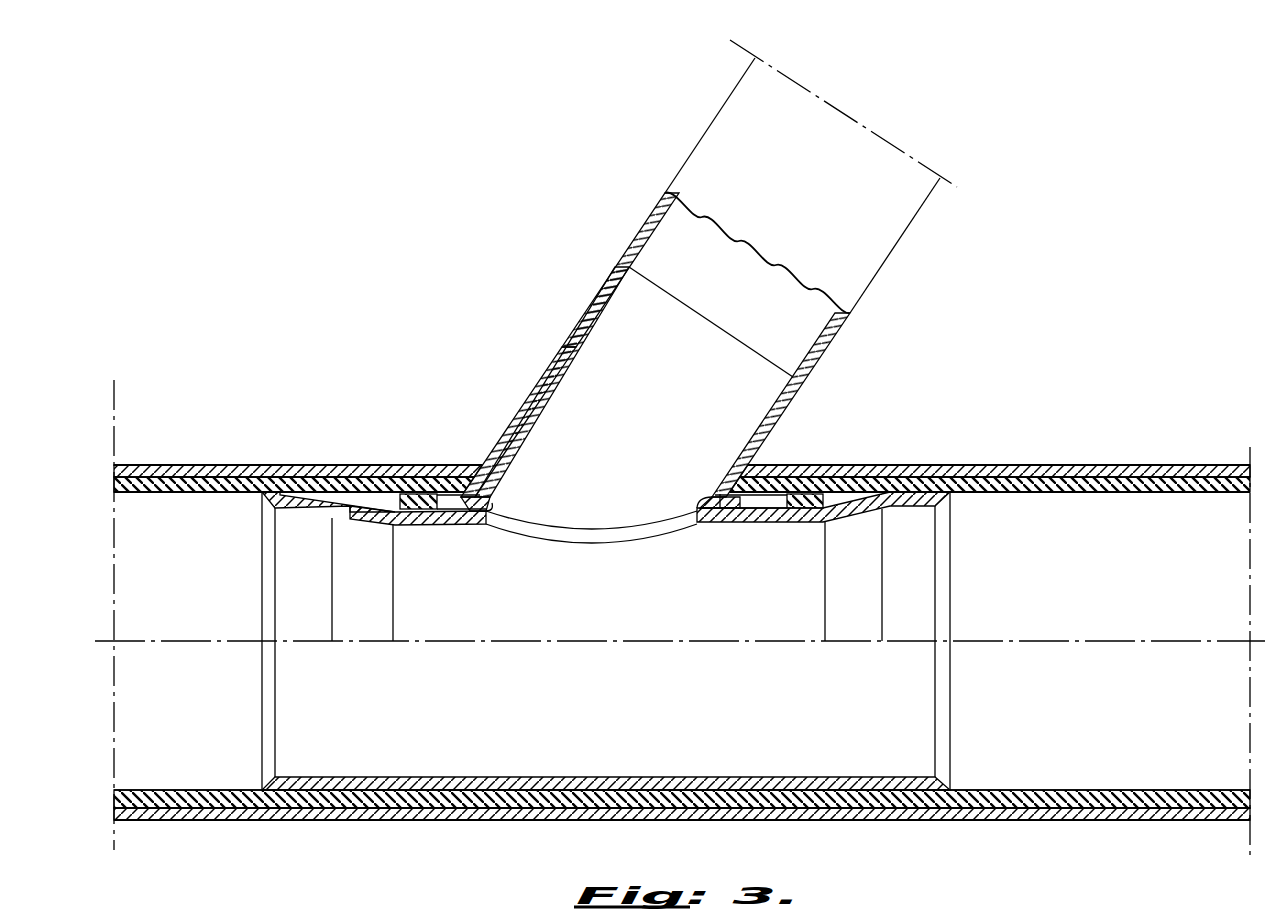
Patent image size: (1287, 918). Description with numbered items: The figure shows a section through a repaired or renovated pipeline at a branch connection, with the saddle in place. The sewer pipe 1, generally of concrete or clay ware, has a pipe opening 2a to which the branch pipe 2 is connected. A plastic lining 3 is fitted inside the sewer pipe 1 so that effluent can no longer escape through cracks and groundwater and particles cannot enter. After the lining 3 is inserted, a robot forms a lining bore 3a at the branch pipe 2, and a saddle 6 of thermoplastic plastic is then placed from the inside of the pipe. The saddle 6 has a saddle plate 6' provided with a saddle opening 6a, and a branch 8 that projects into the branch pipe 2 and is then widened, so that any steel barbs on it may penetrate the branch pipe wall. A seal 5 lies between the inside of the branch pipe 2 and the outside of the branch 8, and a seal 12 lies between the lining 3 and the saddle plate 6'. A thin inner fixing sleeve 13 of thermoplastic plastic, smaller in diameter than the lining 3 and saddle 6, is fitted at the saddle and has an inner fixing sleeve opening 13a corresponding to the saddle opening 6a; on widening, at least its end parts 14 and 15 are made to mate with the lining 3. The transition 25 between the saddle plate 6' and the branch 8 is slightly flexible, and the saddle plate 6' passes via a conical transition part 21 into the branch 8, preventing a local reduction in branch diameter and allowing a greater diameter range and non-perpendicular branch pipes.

The sewer pipe 1 is at (297, 465).
The branch pipe 2 is at (912, 214).
The pipe opening 2a is at (710, 485).
The plastic lining 3 is at (167, 487).
The lining bore 3a is at (483, 470).
The seal 5 is at (597, 293).
The saddle 6 is at (518, 399).
The saddle plate 6' is at (437, 452).
The saddle opening 6a is at (490, 503).
The branch 8 is at (573, 372).
The seal 12 is at (400, 482).
The inner fixing sleeve 13 is at (925, 583).
The inner fixing sleeve opening 13a is at (600, 538).
The end part 14 is at (922, 494).
The end part 15 is at (266, 463).
The conical transition part 21 is at (703, 483).
The transition 25 is at (693, 498).